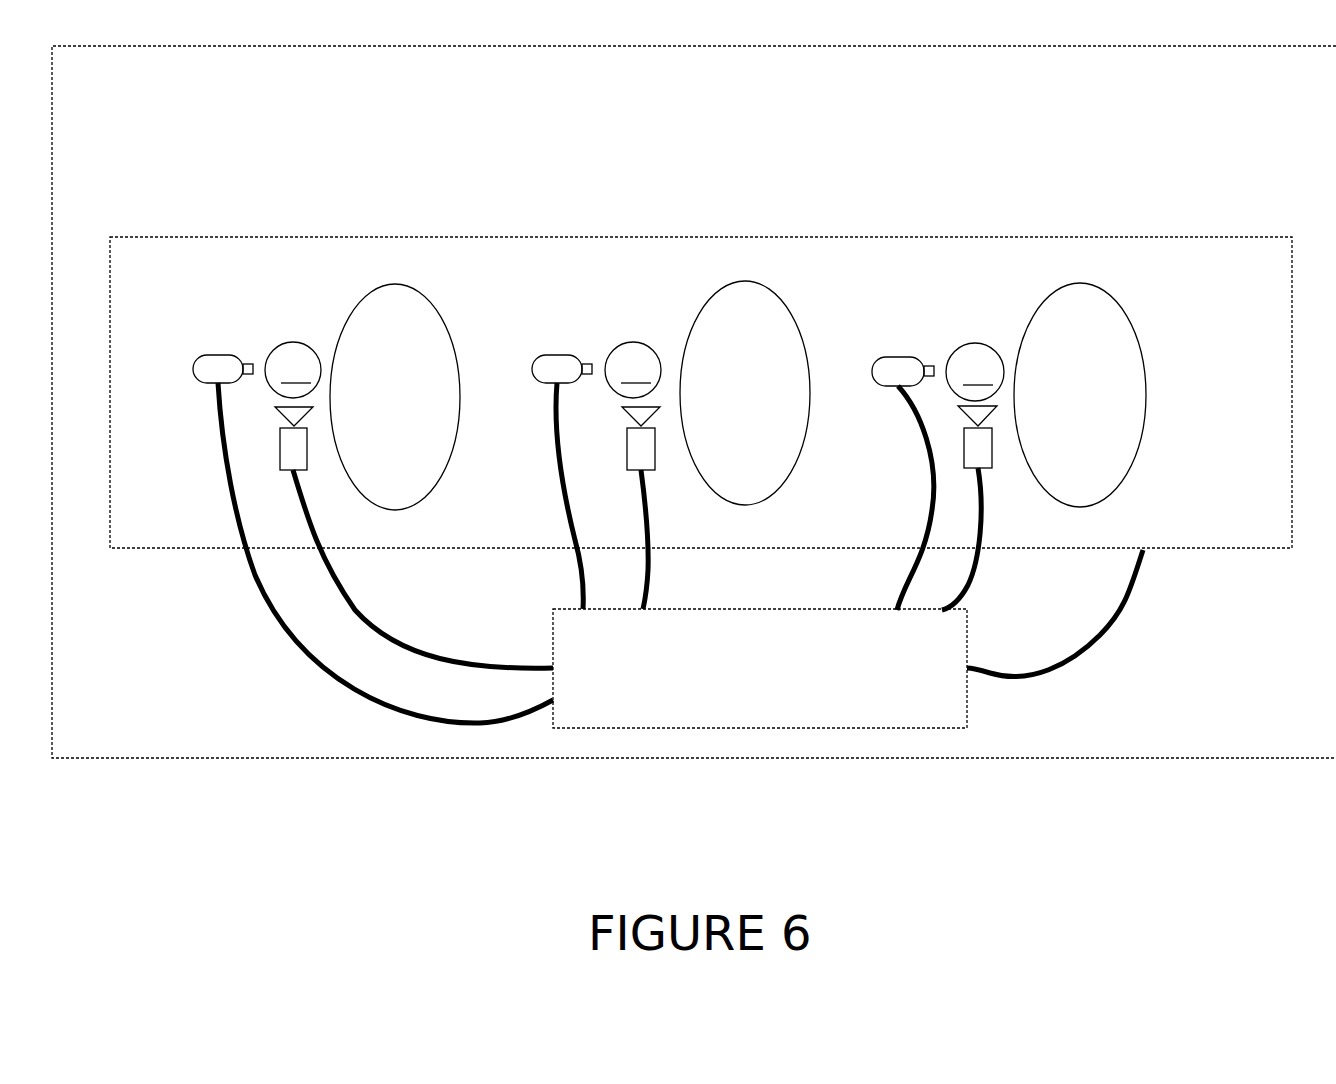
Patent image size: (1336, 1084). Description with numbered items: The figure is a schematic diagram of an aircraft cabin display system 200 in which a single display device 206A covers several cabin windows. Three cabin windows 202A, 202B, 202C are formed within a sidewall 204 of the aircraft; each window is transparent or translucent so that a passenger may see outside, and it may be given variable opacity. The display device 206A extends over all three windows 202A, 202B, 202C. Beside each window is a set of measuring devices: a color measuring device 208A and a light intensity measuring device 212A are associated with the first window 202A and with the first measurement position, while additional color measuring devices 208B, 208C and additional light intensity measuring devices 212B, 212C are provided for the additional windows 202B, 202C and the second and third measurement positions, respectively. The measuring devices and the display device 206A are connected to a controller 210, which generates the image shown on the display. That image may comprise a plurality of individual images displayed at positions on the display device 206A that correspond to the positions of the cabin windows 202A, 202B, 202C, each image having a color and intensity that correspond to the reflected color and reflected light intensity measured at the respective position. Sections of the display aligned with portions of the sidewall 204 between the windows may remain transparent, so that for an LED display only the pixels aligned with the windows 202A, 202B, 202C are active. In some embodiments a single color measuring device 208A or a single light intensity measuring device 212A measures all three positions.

The aircraft cabin display system 200 is at (358, 796).
The sidewall 204 is at (197, 151).
The display device 206A is at (1145, 237).
The controller 210 is at (767, 684).
The cabin window 202A is at (392, 283).
The additional cabin window 202B is at (735, 282).
The additional cabin window 202C is at (1074, 288).
The color measuring device 208A is at (307, 450).
The additional color measuring device 208B is at (655, 452).
The additional color measuring device 208C is at (992, 450).
The light intensity measuring device 212A is at (222, 355).
The additional light intensity measuring device 212B is at (561, 355).
The additional light intensity measuring device 212C is at (900, 357).